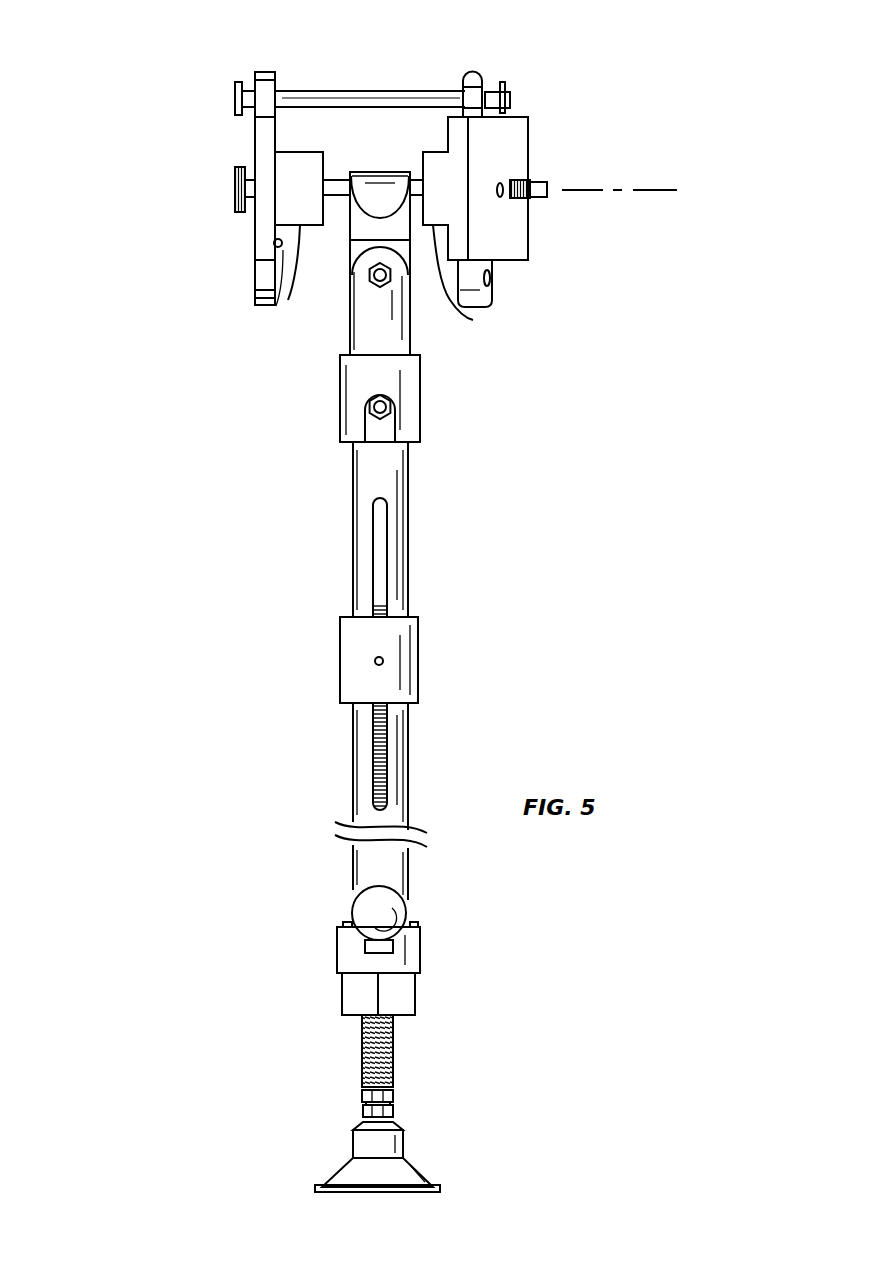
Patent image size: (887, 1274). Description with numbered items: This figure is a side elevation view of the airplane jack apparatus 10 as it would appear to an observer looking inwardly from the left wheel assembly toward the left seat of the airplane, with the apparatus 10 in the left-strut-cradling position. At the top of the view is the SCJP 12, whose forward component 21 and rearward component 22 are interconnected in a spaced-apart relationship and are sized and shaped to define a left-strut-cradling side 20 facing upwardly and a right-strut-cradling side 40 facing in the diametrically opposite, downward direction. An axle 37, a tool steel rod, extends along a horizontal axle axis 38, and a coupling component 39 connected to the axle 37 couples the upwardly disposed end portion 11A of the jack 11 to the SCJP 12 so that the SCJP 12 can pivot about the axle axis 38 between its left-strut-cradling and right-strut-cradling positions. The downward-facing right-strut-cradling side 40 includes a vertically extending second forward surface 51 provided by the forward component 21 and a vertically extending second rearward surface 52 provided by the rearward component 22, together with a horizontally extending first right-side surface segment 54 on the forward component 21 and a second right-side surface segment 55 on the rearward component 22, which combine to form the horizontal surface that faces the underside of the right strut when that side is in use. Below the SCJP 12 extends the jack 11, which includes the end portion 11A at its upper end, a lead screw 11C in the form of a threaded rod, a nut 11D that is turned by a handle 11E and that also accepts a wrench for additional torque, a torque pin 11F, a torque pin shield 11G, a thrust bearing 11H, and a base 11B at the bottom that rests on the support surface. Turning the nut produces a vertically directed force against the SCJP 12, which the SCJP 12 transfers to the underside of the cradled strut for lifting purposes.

The airplane jack apparatus 10 is at (389, 602).
The jack 11 is at (346, 741).
The upwardly disposed end portion 11A is at (417, 423).
The base 11B is at (405, 1162).
The lead screw 11C is at (393, 1057).
The nut 11D is at (352, 1000).
The handle 11E is at (365, 905).
The torque pin 11F is at (376, 658).
The torque pin shield 11G is at (418, 628).
The thrust bearing 11H is at (412, 922).
The SCJP 12 is at (537, 112).
The left-strut-cradling side 20 is at (354, 124).
The forward component 21 is at (263, 72).
The rearward component 22 is at (480, 72).
The axle 37 is at (340, 182).
The axle axis 38 is at (665, 188).
The coupling component 39 is at (405, 178).
The right-strut-cradling side 40 is at (318, 290).
The second forward surface 51 is at (278, 240).
The second rearward surface 52 is at (450, 238).
The first right-side surface segment 54 is at (288, 300).
The second right-side surface segment 55 is at (473, 320).